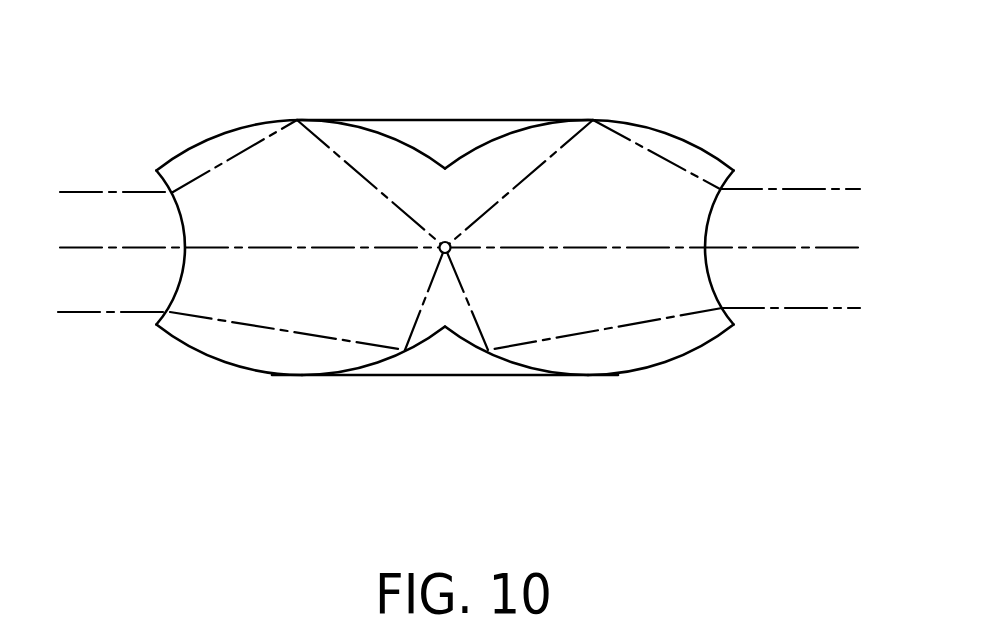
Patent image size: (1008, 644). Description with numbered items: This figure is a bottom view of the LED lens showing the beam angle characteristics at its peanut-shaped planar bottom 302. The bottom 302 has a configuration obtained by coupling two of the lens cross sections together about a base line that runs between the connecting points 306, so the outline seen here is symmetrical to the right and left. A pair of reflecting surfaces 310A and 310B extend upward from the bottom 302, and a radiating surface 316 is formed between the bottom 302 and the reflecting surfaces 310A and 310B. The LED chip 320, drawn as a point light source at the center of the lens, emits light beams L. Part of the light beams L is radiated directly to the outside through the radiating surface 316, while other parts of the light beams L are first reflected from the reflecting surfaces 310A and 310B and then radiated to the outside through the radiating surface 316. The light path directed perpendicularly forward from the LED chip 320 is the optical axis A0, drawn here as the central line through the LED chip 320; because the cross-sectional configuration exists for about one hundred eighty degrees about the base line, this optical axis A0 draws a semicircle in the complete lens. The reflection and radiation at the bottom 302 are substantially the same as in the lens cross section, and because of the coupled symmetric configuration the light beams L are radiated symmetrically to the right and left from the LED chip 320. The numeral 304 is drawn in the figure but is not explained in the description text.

The bottom 302 is at (617, 183).
The first lens surface 304 is at (370, 375).
The connecting points 306 is at (447, 330).
The reflecting surface 310A is at (443, 120).
The reflecting surface 310B is at (517, 375).
The radiating surface 316 is at (184, 275).
The LED chip 320 is at (442, 253).
The light beams L is at (770, 308).
The optical axis A0 is at (828, 248).